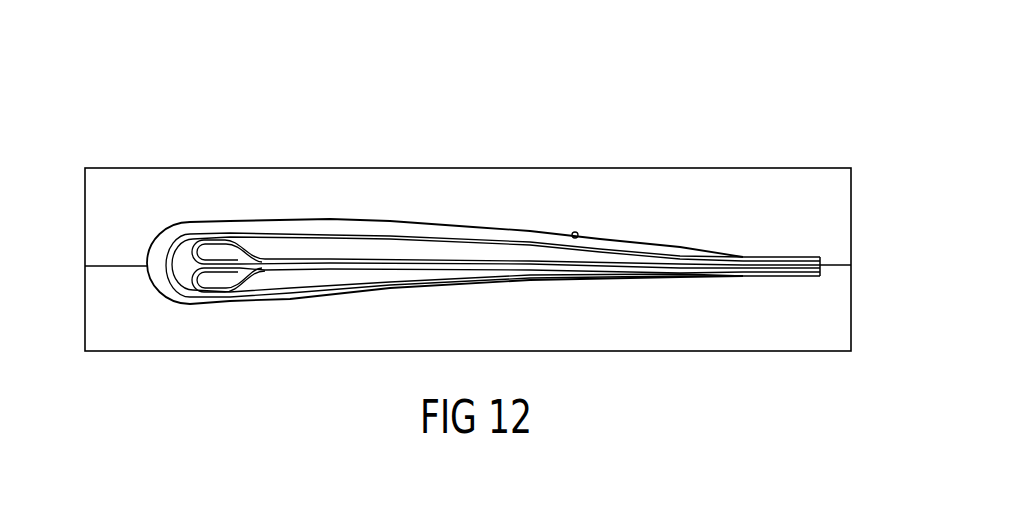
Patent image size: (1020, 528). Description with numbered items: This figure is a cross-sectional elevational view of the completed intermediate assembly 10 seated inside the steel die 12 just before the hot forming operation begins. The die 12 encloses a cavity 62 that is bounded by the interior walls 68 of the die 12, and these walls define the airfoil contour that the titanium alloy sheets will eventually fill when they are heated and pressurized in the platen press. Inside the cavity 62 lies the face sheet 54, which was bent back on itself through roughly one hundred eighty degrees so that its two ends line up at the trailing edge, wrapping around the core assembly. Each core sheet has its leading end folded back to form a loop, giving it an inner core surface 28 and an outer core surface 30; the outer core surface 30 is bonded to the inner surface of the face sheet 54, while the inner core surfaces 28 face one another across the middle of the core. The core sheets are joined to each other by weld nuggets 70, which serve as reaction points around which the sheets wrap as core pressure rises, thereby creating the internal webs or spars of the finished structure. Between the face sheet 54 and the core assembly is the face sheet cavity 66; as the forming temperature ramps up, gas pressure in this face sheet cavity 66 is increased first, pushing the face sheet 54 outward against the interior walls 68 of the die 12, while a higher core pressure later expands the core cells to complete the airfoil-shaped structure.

The intermediate assembly 10 is at (792, 226).
The die 12 is at (680, 168).
The inner core surface 28 is at (472, 265).
The outer core surface 30 is at (363, 257).
The face sheet 54 is at (307, 232).
The cavity 62 is at (473, 229).
The face sheet cavity 66 is at (189, 257).
The interior walls of die 68 is at (572, 230).
The weld nuggets 70 is at (328, 262).